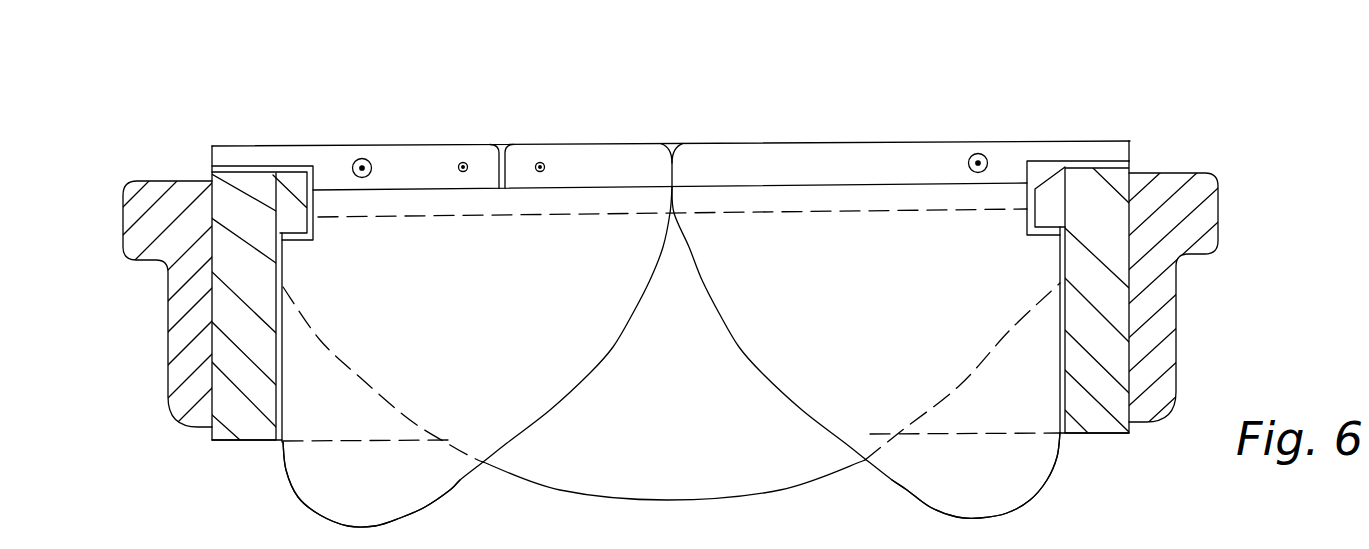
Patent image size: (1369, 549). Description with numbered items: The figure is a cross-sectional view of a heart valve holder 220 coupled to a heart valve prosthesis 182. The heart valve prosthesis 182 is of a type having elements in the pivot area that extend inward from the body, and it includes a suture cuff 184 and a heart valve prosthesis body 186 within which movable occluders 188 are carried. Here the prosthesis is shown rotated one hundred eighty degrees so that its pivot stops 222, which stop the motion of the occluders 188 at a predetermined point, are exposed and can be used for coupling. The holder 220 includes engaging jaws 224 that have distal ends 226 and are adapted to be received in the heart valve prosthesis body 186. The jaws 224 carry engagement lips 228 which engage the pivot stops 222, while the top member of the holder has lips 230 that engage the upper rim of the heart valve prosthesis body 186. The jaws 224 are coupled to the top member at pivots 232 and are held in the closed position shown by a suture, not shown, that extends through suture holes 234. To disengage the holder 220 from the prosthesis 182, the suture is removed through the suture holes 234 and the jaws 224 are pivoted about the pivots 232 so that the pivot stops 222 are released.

The heart valve prosthesis 182 is at (159, 156).
The suture cuff 184 is at (290, 208).
The heart valve prosthesis body 186 is at (247, 441).
The movable occluders 188 is at (262, 261).
The heart valve holder 220 is at (265, 122).
The pivot stops 222 is at (211, 206).
The engaging jaws 224 is at (432, 148).
The distal ends 226 is at (393, 507).
The engagement lips 228 is at (297, 245).
The lips 230 is at (209, 178).
The pivots 232 is at (366, 157).
The suture holes 234 is at (465, 161).